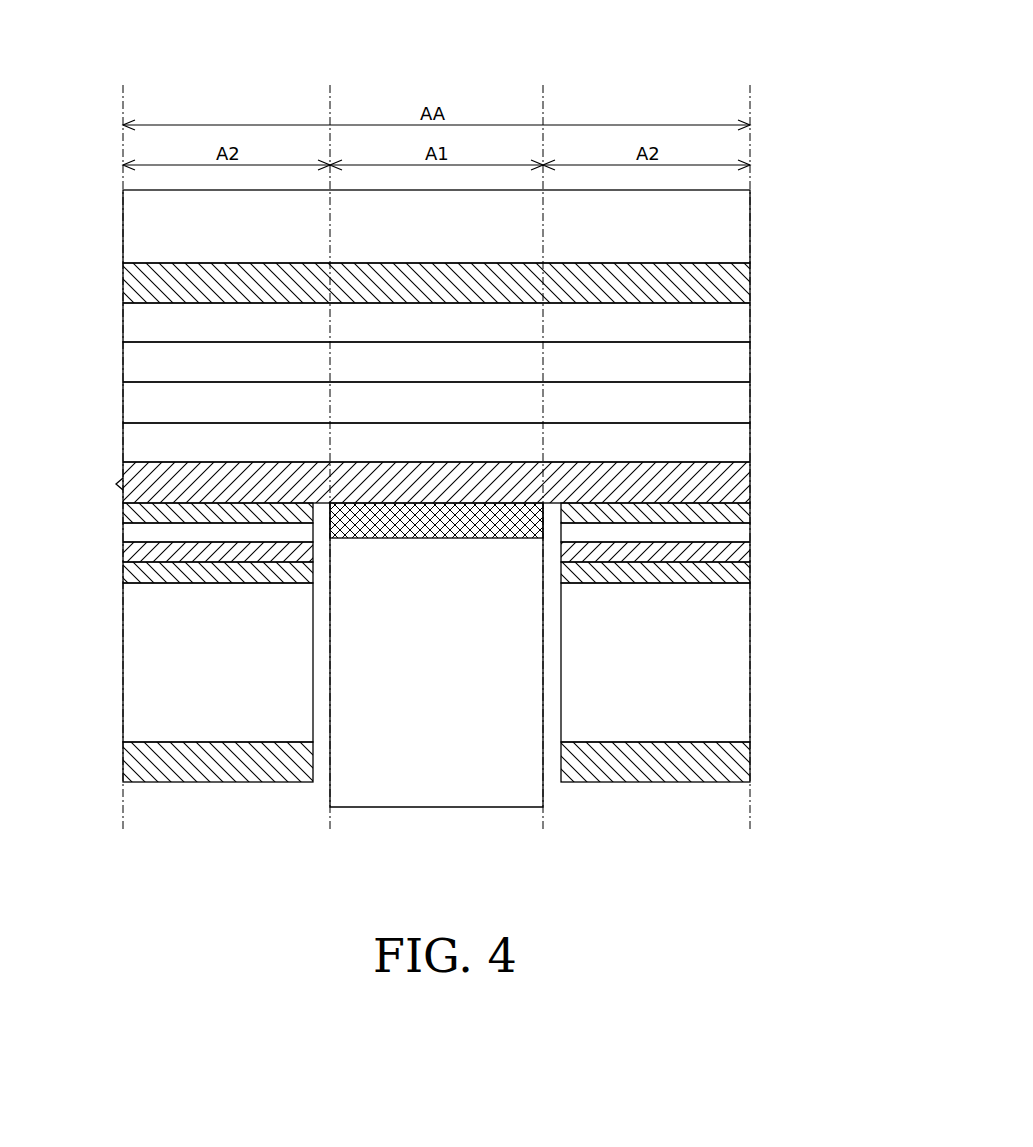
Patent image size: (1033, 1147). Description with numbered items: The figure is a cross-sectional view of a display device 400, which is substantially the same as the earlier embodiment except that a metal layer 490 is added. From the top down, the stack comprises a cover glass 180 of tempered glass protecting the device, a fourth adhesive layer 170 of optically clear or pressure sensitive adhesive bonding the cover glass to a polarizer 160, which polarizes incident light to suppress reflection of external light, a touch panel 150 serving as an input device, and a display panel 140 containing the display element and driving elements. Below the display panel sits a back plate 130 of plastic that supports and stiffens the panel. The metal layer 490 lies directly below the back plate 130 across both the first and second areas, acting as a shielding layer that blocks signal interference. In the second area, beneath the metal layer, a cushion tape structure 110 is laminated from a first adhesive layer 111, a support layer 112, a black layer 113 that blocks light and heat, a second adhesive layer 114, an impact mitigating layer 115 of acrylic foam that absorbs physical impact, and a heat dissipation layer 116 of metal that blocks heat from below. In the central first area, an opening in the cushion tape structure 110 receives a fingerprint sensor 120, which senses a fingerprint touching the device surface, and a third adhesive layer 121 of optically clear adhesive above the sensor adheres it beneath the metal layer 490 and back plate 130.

The display device 400 is at (726, 35).
The cover glass 180 is at (730, 228).
The fourth adhesive layer 170 is at (730, 280).
The polarizer 160 is at (730, 325).
The touch panel 150 is at (730, 363).
The display panel 140 is at (730, 404).
The back plate 130 is at (730, 444).
The metal layer 490 is at (730, 485).
The cushion tape structure 110 is at (495, 642).
The first adhesive layer 111 is at (730, 516).
The support layer 112 is at (730, 534).
The black layer 113 is at (730, 554).
The second adhesive layer 114 is at (730, 576).
The impact mitigating layer 115 is at (730, 688).
The heat dissipation layer 116 is at (468, 762).
The fingerprint sensor 120 is at (355, 601).
The third adhesive layer 121 is at (345, 521).